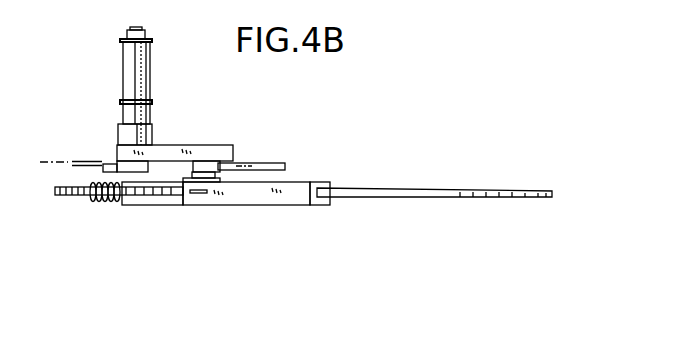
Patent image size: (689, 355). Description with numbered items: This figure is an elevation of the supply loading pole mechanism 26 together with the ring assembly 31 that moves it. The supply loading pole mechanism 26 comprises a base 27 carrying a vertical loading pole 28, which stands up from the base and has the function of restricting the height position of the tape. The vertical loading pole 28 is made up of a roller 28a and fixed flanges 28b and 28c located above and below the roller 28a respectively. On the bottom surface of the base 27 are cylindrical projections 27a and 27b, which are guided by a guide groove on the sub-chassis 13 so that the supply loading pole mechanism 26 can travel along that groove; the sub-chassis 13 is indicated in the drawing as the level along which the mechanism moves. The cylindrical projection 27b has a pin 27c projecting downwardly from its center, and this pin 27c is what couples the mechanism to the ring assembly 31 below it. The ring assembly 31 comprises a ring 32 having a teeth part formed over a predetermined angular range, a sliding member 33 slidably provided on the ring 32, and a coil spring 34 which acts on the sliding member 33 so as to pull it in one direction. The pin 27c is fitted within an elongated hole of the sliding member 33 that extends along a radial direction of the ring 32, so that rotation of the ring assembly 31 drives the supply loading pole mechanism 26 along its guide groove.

The sub-chassis 13 is at (63, 158).
The supply loading pole mechanism 26 is at (178, 130).
The base 27 is at (172, 146).
The cylindrical projection 27a is at (137, 163).
The cylindrical projection 27b is at (203, 165).
The pin 27c is at (212, 193).
The vertical loading pole 28 is at (133, 84).
The roller 28a is at (122, 73).
The fixed flange 28b is at (125, 39).
The fixed flange 28c is at (121, 102).
The ring assembly 31 is at (507, 188).
The ring 32 is at (417, 186).
The sliding member 33 is at (262, 200).
The coil spring 34 is at (103, 203).